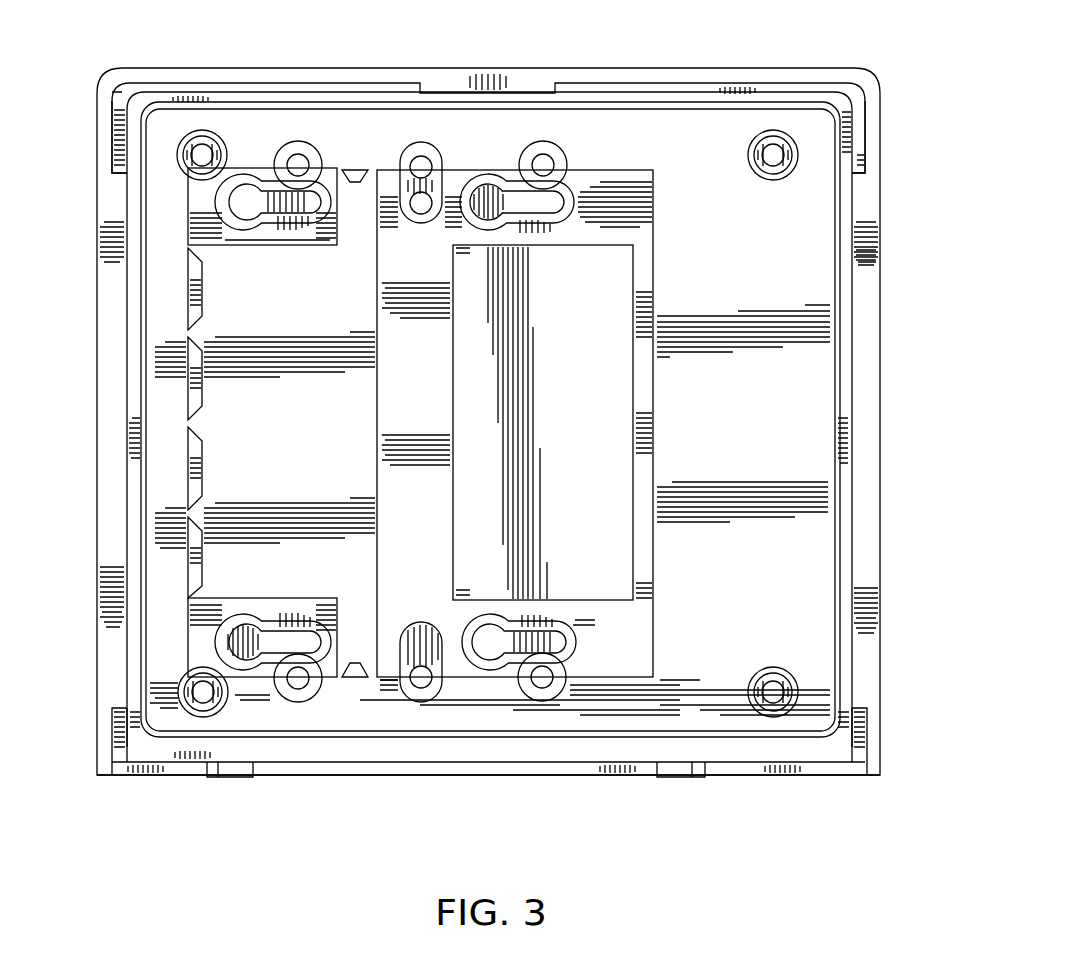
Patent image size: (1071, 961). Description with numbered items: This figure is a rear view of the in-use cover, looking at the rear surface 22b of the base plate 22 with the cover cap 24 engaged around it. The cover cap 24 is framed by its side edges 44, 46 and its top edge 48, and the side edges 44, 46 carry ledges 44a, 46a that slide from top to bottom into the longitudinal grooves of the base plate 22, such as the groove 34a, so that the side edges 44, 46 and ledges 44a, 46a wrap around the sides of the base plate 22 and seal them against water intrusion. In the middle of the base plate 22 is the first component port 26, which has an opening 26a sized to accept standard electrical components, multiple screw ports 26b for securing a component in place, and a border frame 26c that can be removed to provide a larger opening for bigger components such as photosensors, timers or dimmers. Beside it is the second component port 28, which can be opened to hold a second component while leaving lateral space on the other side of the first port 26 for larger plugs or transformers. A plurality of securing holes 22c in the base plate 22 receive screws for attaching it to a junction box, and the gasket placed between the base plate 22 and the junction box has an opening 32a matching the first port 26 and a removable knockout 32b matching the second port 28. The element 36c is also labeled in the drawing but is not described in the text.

The base plate 22 is at (703, 108).
The rear surface 22b is at (600, 660).
The securing holes 22c is at (775, 152).
The cover cap 24 is at (105, 72).
The first component port 26 is at (622, 287).
The opening 26a is at (592, 256).
The screw ports 26b is at (515, 188).
The border frame 26c is at (396, 420).
The second component port 28 is at (190, 572).
The opening 32a is at (652, 563).
The removable knockout 32b is at (311, 420).
The longitudinal groove 34a is at (140, 735).
The right foot 36c is at (855, 736).
The side edge 44 is at (97, 275).
The ledge 44a is at (127, 468).
The side edge 46 is at (880, 276).
The ledge 46a is at (852, 470).
The top edge 48 is at (360, 68).